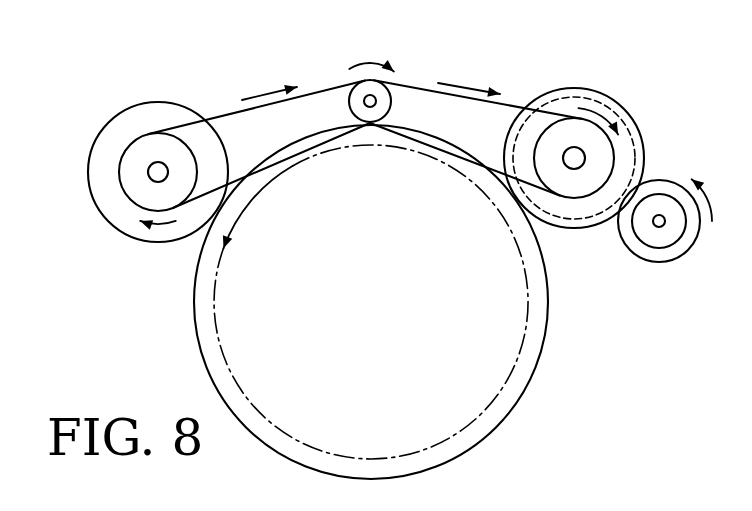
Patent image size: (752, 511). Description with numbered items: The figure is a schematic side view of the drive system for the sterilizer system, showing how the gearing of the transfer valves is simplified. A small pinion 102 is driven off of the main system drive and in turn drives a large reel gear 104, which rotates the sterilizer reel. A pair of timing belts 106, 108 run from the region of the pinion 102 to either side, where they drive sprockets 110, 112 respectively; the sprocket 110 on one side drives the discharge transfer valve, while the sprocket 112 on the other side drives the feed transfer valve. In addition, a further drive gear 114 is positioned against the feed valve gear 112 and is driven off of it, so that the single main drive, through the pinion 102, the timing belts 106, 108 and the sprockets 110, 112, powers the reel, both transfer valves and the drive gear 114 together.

The pinion 102 is at (391, 90).
The reel gear 104 is at (197, 338).
The timing belt 106 is at (218, 119).
The timing belt 108 is at (505, 105).
The sprocket 110 is at (88, 168).
The sprocket 112 is at (598, 92).
The drive gear 114 is at (670, 262).